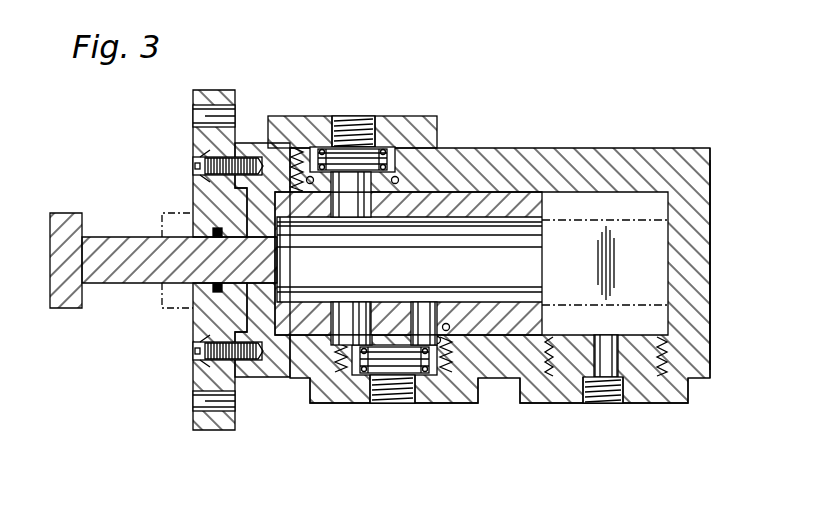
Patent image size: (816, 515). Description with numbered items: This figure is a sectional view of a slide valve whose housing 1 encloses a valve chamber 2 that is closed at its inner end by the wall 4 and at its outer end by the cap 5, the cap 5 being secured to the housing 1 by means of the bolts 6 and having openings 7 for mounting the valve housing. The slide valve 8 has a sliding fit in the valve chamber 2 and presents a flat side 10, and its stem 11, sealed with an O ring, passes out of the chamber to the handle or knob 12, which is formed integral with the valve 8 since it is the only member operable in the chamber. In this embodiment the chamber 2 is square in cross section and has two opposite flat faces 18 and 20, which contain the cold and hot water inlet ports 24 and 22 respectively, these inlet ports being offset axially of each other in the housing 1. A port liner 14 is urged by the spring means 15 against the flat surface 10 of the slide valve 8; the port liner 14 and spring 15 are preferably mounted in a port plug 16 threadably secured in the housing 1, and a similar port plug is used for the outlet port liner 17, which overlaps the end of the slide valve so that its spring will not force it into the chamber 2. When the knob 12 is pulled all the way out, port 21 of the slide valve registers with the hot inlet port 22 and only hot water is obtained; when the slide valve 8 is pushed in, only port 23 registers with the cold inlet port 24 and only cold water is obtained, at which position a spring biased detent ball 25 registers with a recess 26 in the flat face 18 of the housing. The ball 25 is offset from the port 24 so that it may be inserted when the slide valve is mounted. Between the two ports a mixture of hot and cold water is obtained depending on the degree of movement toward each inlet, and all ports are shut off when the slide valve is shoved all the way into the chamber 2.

The valve housing 1 is at (662, 153).
The valve chamber 2 is at (658, 233).
The wall 4 is at (712, 200).
The cap 5 is at (193, 203).
The bolts 6 is at (193, 166).
The openings 7 is at (205, 117).
The slide valve 8 is at (505, 195).
The flat side 10 is at (290, 372).
The stem 11 is at (130, 284).
The handle or knob 12 is at (68, 309).
The port liner 14 is at (397, 177).
The spring means 15 is at (318, 147).
The port plug 16 is at (394, 116).
The outlet port liner 17 is at (606, 346).
The flat face 18 is at (393, 360).
The flat face 20 is at (595, 193).
The port 21 is at (357, 212).
The hot water inlet port 22 is at (368, 116).
The port 23 is at (353, 312).
The cold water inlet port 24 is at (391, 406).
The spring biased detent ball 25 is at (446, 323).
The recess 26 is at (490, 335).